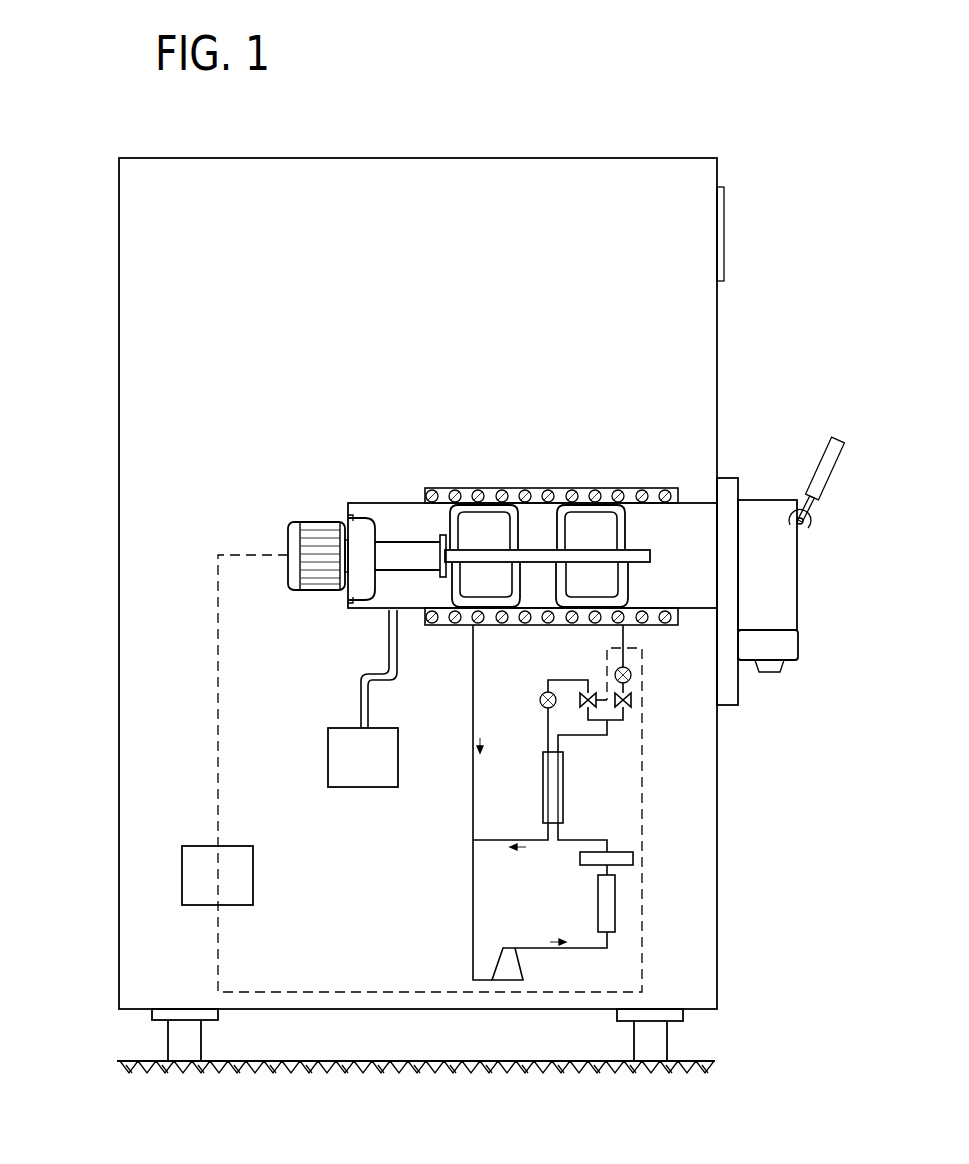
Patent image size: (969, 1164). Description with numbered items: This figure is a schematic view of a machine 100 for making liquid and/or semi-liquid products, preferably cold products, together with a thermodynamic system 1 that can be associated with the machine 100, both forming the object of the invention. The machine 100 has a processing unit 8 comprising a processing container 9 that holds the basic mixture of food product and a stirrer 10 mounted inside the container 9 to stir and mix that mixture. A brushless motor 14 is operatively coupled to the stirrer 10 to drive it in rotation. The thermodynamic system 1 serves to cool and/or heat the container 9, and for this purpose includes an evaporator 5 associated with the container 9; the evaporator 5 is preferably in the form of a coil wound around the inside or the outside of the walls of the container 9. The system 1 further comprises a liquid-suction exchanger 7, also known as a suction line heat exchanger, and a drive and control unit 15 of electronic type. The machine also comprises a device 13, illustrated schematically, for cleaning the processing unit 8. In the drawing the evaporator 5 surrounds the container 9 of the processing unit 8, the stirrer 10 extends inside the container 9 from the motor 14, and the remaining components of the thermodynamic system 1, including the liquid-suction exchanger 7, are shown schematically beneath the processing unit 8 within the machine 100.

The machine 100 is at (598, 142).
The thermodynamic system 1 is at (630, 903).
The evaporator 5 is at (605, 480).
The liquid-suction exchanger 7 is at (582, 783).
The processing unit 8 is at (503, 480).
The container 9 is at (671, 565).
The stirrer 10 is at (432, 520).
The device for cleaning 13 is at (350, 771).
The brushless motor 14 is at (310, 505).
The drive and control unit 15 is at (205, 888).